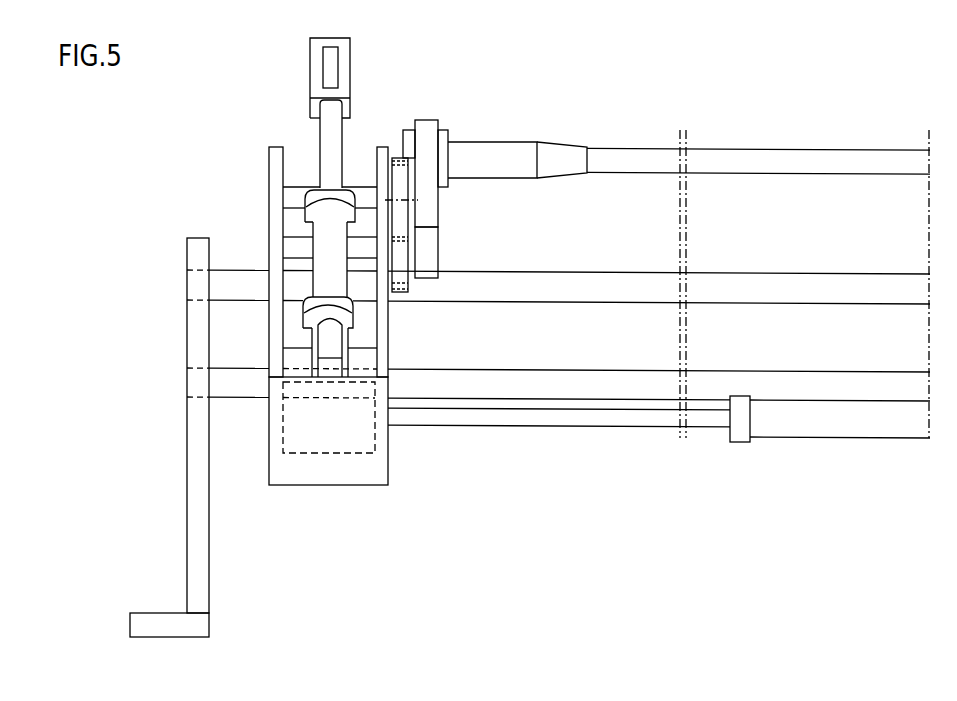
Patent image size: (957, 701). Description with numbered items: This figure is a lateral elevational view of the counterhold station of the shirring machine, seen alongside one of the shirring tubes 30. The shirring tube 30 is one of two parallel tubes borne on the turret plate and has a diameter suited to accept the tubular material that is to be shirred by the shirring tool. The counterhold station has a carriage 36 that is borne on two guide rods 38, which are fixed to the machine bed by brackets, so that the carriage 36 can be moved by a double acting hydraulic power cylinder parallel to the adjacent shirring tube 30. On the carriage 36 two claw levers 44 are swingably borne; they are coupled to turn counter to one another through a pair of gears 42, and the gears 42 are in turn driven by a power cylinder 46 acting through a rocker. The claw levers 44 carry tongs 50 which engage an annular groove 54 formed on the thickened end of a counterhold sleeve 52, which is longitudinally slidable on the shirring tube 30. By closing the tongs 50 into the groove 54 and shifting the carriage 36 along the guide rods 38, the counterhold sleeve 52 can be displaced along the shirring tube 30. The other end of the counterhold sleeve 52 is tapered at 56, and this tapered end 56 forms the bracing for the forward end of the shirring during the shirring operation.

The shirring tube 30 is at (748, 158).
The carriage 36 is at (360, 316).
The guide rods 38 is at (774, 292).
The pair of gears 42 is at (445, 317).
The claw levers 44 is at (425, 247).
The power cylinder 46 is at (323, 287).
The tongs 50 is at (425, 120).
The counterhold sleeve 52 is at (497, 126).
The annular groove 54 is at (433, 150).
The tapered end 56 is at (558, 153).